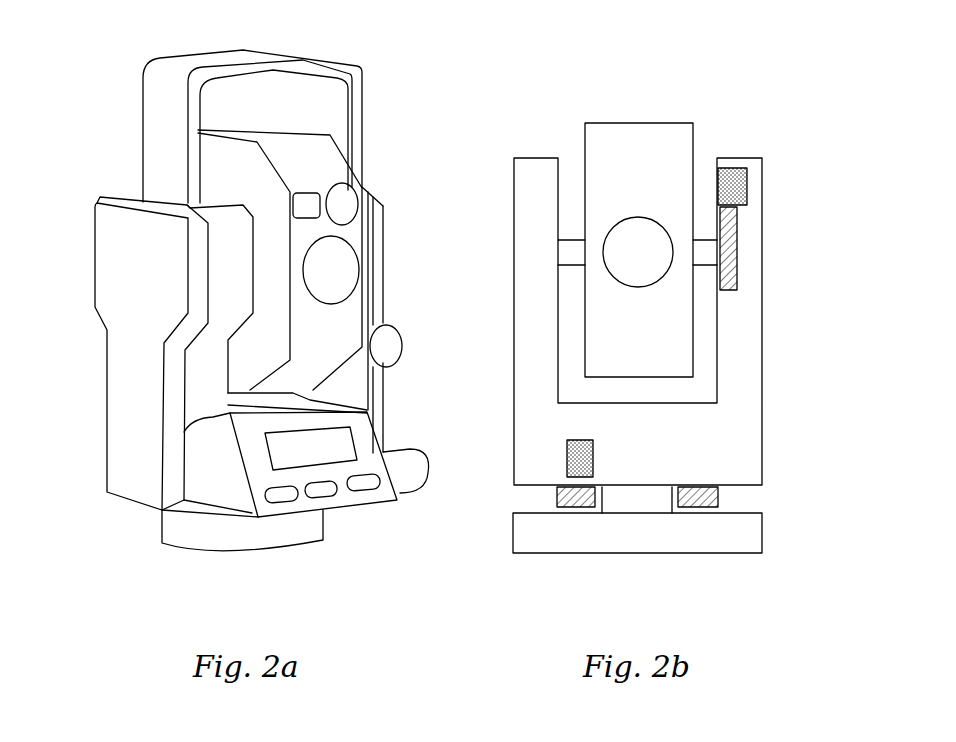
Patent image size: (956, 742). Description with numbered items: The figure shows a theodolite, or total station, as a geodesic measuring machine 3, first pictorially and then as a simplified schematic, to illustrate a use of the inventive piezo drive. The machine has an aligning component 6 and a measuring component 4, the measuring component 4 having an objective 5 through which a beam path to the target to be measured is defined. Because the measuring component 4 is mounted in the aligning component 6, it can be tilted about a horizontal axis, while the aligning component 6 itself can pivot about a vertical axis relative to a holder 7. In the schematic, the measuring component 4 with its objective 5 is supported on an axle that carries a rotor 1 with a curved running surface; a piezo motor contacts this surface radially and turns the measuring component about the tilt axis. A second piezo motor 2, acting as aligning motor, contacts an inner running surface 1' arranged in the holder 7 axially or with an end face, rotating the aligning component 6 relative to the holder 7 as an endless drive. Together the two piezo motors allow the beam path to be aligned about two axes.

In FIG. 2b, the rotor 1 is at (768, 248).
In FIG. 2b, the inner running surface 1' is at (575, 537).
In FIG. 2b, the second piezo motor 2 is at (737, 168).
In FIG. 2a, the geodesic measuring machine 3 is at (384, 156).
In FIG. 2b, the geodesic measuring machine 3 is at (490, 158).
In FIG. 2a, the measuring component 4 is at (283, 153).
In FIG. 2b, the measuring component 4 is at (620, 173).
In FIG. 2a, the objective 5 is at (343, 270).
In FIG. 2b, the objective 5 is at (637, 248).
In FIG. 2a, the aligning component 6 is at (143, 455).
In FIG. 2b, the aligning component 6 is at (533, 272).
In FIG. 2b, the holder 7 is at (693, 532).